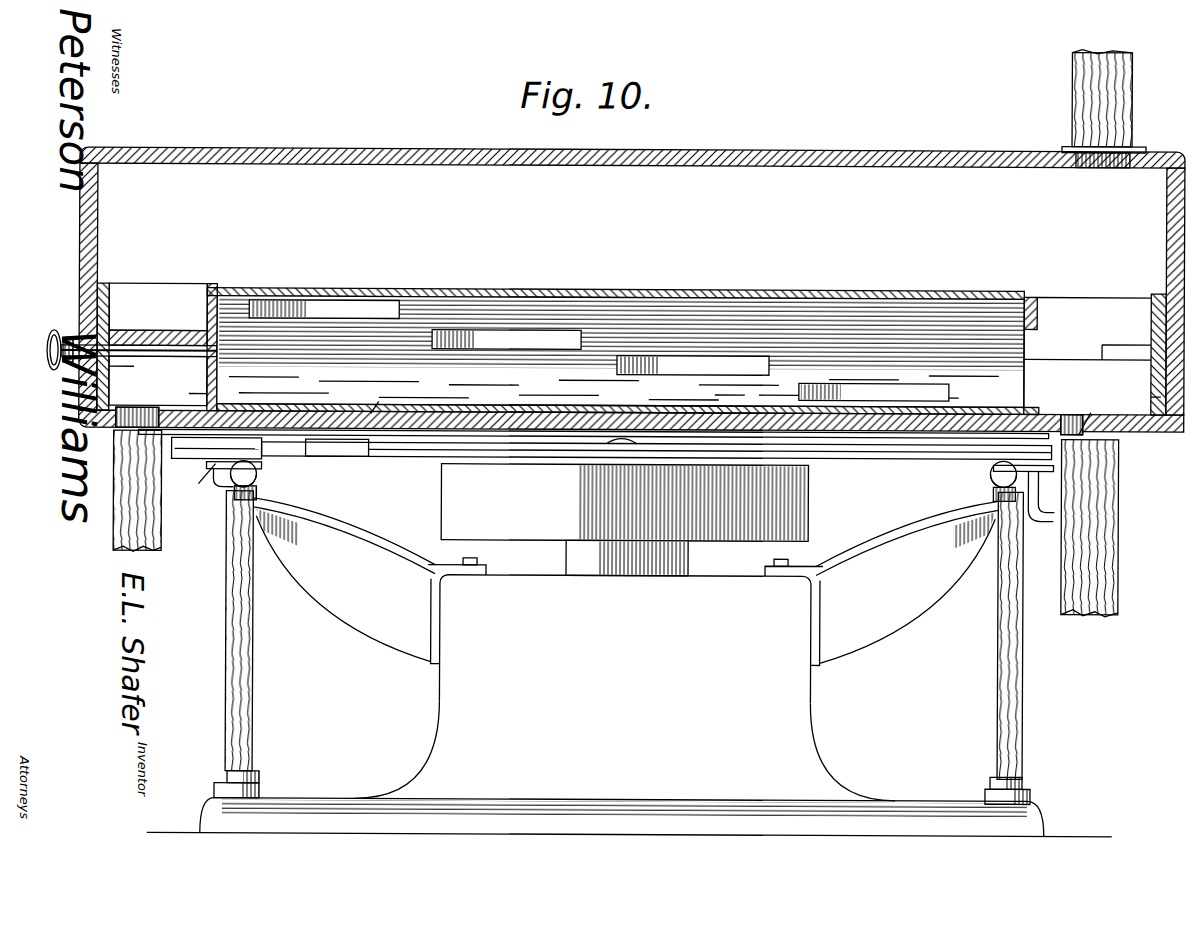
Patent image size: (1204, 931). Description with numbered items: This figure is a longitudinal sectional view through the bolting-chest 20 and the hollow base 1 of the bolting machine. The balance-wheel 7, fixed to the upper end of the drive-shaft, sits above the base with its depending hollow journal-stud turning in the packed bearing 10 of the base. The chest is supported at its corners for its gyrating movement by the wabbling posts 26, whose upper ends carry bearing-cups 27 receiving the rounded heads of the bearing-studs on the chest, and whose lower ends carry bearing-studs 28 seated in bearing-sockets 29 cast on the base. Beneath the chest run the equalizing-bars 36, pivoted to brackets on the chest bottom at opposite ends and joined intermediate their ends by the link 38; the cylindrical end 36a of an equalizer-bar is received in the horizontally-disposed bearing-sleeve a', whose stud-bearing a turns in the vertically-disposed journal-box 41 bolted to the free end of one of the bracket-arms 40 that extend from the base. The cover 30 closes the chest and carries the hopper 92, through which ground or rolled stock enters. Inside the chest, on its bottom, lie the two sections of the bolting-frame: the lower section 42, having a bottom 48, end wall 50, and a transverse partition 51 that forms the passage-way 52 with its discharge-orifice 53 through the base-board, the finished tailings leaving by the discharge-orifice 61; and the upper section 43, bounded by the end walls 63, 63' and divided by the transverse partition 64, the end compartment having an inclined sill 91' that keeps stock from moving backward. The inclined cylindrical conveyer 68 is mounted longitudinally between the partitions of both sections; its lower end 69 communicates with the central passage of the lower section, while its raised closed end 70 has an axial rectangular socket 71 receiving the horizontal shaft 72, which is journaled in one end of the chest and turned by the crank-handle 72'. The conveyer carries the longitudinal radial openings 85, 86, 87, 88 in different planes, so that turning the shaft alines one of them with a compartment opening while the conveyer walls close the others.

The hollow base 1 is at (607, 668).
The balance-wheel 7 is at (624, 503).
The bearing 10 is at (592, 556).
The bolting-chest 20 is at (632, 297).
The wabbling posts 26 is at (232, 635).
The bearing-cups 27 is at (262, 478).
The bearing-studs 28 is at (275, 772).
The bearing-sockets 29 is at (217, 786).
The cover 30 is at (585, 164).
The equalizing-bars 36 is at (925, 456).
The cylindrical end 36a is at (148, 456).
The link 38 is at (618, 447).
The bracket-arms 40 is at (886, 592).
The journal-box 41 is at (216, 470).
The lower section of bolting-frame 42 is at (1062, 371).
The upper section of bolting-frame 43 is at (1087, 328).
The bottom 48 is at (388, 395).
The end wall 50 is at (635, 386).
The transverse partition 51 is at (184, 393).
The passage-way 52 is at (158, 380).
The discharge-orifice 53 is at (125, 436).
The discharge-orifice 61 is at (1093, 411).
The end wall 63 is at (125, 331).
The end wall 63' is at (1139, 338).
The transverse partition 64 is at (212, 285).
The inclined cylindrical conveyer 68 is at (745, 395).
The lower end of conveyer 69 is at (1030, 396).
The raised closed end 70 is at (205, 332).
The axial rectangular socket 71 is at (237, 380).
The horizontal shaft 72 is at (139, 365).
The crank-handle 72' is at (43, 336).
The longitudinal radial opening 85 is at (366, 298).
The longitudinal radial opening 86 is at (546, 340).
The longitudinal radial opening 87 is at (636, 366).
The longitudinal radial opening 88 is at (945, 390).
The sill 91' is at (158, 306).
The hopper 92 is at (1072, 94).
The stud-bearing a is at (199, 480).
The bearing-sleeve a' is at (217, 448).